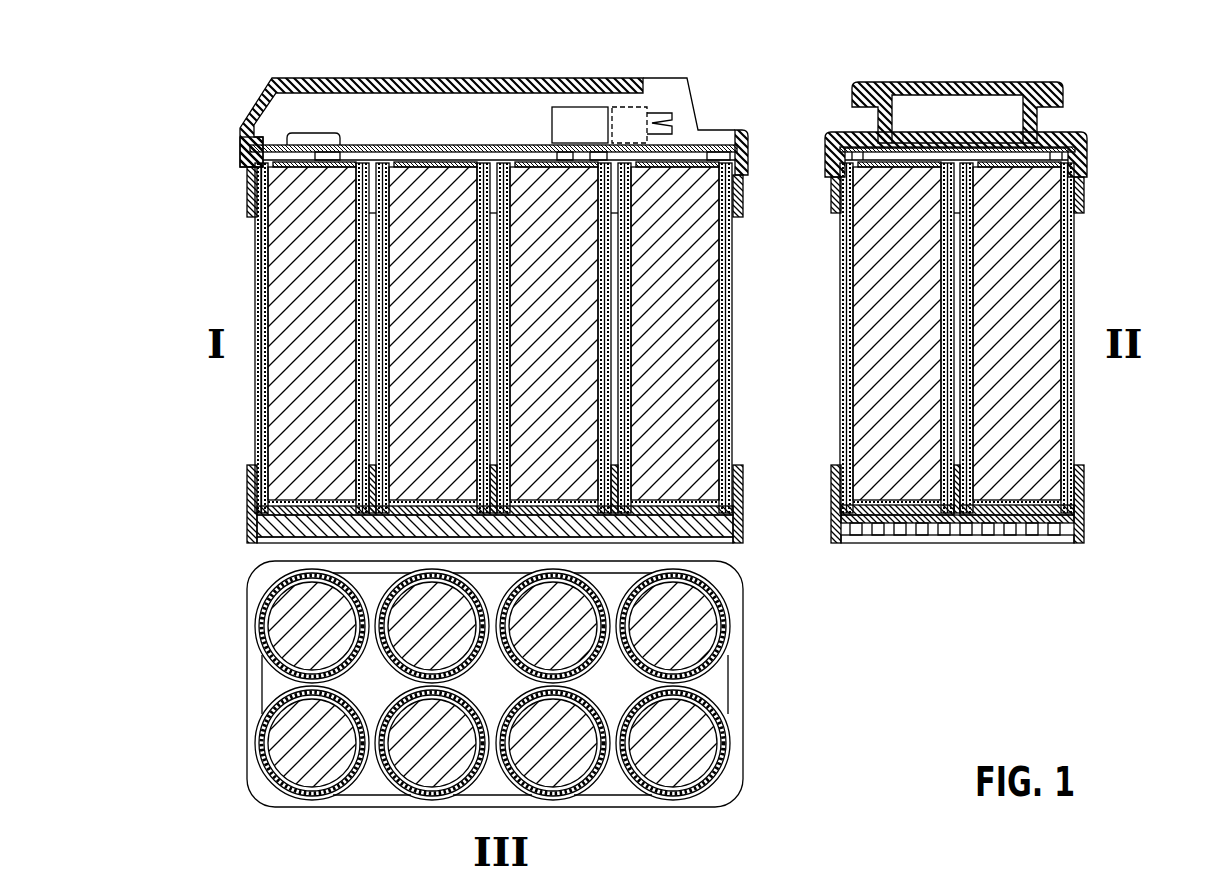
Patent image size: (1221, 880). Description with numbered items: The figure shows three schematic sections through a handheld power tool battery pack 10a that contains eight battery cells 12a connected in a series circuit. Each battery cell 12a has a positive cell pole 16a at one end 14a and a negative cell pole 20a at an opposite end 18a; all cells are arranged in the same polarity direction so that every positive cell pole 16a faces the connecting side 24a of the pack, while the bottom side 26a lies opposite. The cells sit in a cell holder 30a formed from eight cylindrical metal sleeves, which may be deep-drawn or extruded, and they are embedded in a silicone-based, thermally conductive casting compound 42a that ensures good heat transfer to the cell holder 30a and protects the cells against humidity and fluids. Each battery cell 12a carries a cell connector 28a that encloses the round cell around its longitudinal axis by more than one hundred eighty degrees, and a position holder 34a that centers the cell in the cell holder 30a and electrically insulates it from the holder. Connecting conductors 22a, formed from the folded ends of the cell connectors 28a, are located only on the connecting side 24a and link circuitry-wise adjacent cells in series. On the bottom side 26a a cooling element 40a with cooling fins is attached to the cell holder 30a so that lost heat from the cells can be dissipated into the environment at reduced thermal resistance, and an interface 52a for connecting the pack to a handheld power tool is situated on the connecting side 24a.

The handheld power tool battery pack 10a is at (220, 96).
The battery cell 12a is at (300, 440).
The end 14a is at (1033, 183).
The positive cell pole 16a is at (1027, 167).
The opposite end 18a is at (1025, 497).
The negative cell pole 20a is at (1012, 503).
The connecting conductor 22a is at (430, 162).
The connecting side 24a is at (252, 150).
The bottom side 26a is at (305, 508).
The cell connector 28a is at (262, 228).
The cell holder 30a is at (262, 284).
The position holder 34a is at (352, 384).
The cooling element 40a is at (1047, 528).
The casting compound 42a is at (1076, 415).
The interface 52a is at (690, 94).